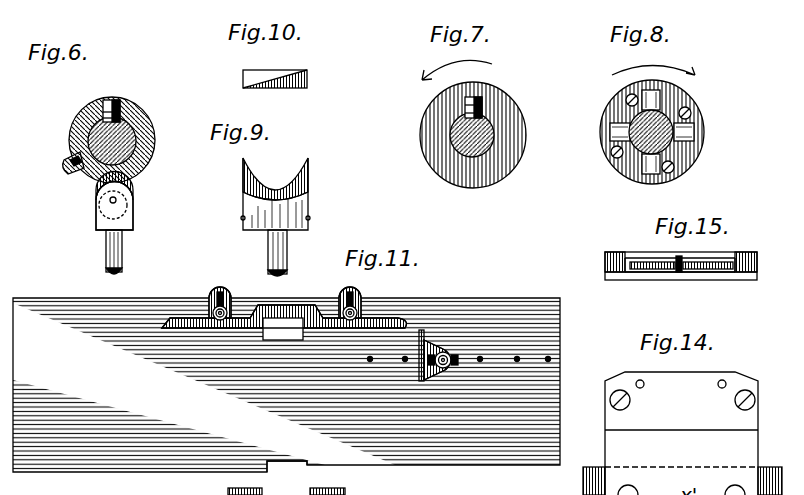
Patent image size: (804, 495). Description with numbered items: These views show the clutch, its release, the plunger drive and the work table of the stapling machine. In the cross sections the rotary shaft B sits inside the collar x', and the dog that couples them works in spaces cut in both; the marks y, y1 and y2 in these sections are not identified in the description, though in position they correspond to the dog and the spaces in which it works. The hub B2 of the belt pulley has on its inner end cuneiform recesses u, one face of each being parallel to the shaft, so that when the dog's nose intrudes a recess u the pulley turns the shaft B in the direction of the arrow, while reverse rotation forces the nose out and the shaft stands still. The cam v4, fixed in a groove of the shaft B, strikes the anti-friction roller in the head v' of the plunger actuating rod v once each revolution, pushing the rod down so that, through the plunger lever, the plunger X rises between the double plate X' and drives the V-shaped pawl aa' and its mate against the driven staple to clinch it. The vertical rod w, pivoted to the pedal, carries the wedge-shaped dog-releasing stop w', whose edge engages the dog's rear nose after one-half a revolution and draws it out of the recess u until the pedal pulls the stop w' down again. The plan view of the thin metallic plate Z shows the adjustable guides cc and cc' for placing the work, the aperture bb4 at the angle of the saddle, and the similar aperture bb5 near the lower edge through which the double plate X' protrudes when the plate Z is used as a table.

In FIG. 6, the collar x' is at (124, 140).
In FIG. 7, the collar x' is at (474, 136).
In FIG. 15, the collar x' is at (650, 264).
In FIG. 15, the plunger x is at (693, 266).
In FIG. 6, the rotary shaft B is at (130, 152).
In FIG. 7, the rotary shaft B is at (452, 142).
In FIG. 8, the rotary shaft B is at (651, 132).
In FIG. 8, the hub B2 is at (612, 164).
In FIG. 6, the key y is at (115, 100).
In FIG. 7, the key y is at (476, 97).
In FIG. 6, the key part y1 is at (106, 108).
In FIG. 7, the key part y1 is at (465, 105).
In FIG. 6, the key part y2 is at (100, 114).
In FIG. 7, the key part y2 is at (465, 114).
In FIG. 8, the cuneiform recess u is at (660, 100).
In FIG. 6, the plunger actuating rod v is at (124, 252).
In FIG. 6, the head of plunger actuating rod v' is at (99, 204).
In FIG. 6, the cam v4 is at (72, 174).
In FIG. 9, the vertical rod w is at (257, 253).
In FIG. 10, the dog-releasing stop w' is at (259, 77).
In FIG. 9, the dog-releasing stop w' is at (292, 194).
In FIG. 15, the V-shaped pawl aa' is at (681, 281).
In FIG. 11, the plate Z is at (402, 390).
In FIG. 11, the adjustable guide cc is at (356, 331).
In FIG. 11, the adjustable guide cc' is at (278, 326).
In FIG. 11, the aperture bb4 is at (295, 458).
In FIG. 11, the aperture bb5 is at (292, 340).